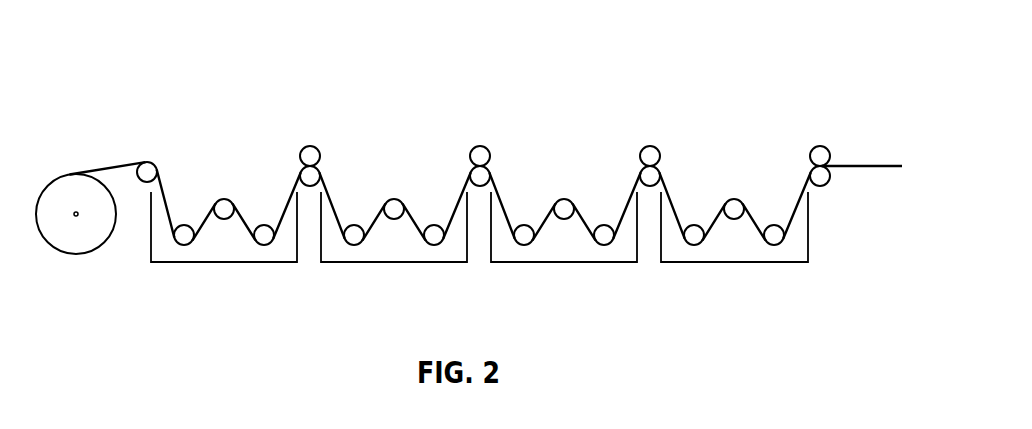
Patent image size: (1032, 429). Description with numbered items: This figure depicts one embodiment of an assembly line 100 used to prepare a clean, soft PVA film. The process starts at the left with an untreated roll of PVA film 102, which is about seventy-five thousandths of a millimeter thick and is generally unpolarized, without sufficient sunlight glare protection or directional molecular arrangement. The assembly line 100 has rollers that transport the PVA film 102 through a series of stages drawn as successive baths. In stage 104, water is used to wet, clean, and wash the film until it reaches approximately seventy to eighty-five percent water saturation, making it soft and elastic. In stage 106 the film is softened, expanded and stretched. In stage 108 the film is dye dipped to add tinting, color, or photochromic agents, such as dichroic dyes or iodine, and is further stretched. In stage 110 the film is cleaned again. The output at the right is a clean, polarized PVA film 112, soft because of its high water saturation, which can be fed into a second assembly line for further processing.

The assembly line 100 is at (164, 64).
The PVA film 102 is at (76, 254).
The stage 104 is at (224, 262).
The stage 106 is at (394, 262).
The stage 108 is at (563, 262).
The stage 110 is at (734, 262).
The polarized PVA film 112 is at (851, 164).